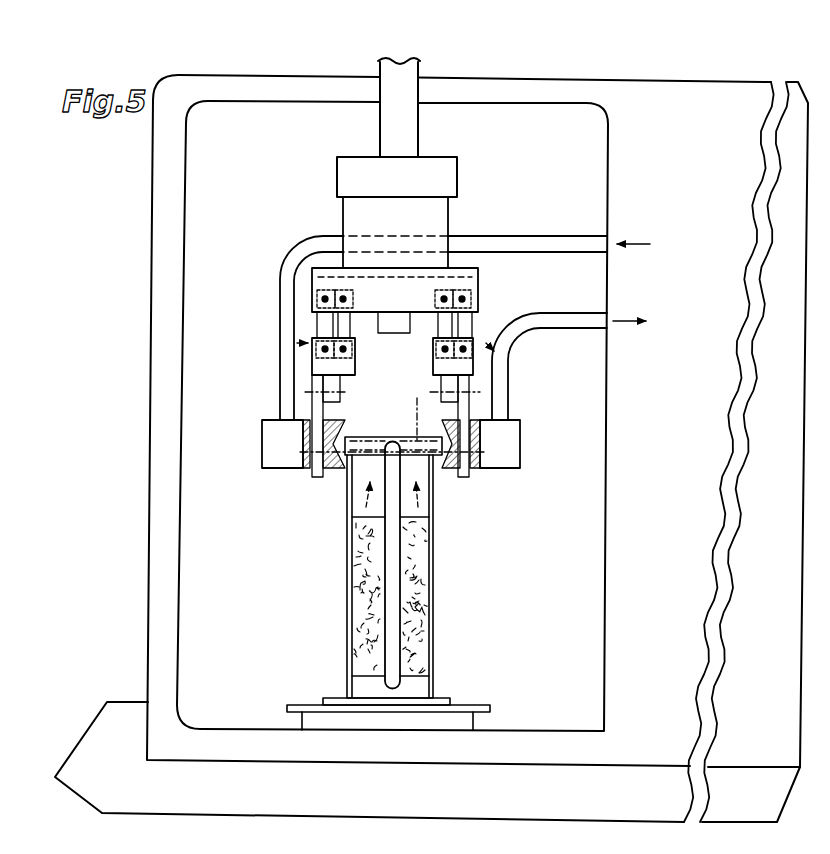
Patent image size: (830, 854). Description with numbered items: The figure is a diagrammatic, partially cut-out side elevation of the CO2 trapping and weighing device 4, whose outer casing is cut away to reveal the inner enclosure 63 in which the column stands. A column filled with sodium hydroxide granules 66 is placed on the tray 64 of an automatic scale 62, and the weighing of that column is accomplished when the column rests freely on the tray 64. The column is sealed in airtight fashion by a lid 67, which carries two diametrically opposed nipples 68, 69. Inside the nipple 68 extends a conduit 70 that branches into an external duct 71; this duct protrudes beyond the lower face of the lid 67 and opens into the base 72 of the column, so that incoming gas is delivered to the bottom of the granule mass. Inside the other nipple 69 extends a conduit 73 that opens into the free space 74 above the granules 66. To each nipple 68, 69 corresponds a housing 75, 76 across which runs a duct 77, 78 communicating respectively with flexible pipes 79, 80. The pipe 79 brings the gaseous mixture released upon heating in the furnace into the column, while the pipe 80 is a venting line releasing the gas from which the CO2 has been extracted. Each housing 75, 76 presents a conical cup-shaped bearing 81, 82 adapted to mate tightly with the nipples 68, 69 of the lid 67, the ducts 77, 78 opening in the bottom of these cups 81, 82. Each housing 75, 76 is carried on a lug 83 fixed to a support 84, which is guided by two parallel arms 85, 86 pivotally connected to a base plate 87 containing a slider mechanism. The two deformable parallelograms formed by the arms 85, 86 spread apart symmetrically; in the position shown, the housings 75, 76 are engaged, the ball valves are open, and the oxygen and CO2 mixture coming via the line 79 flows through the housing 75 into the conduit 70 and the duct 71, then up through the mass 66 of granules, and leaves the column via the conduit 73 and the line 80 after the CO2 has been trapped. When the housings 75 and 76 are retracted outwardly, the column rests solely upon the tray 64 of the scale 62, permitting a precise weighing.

The CO2 measuring device 4 is at (138, 345).
The automatic scale 62 is at (195, 790).
The inner chamber wall 63 is at (200, 597).
The tray 64 is at (465, 720).
The sodium hydroxide granules 66 is at (433, 568).
The lid 67 is at (380, 436).
The nipple 68 is at (350, 437).
The nipple 69 is at (420, 437).
The conduit 70 is at (372, 450).
The external duct 71 is at (391, 622).
The base of column 72 is at (420, 690).
The conduit 73 is at (413, 409).
The free space 74 is at (427, 492).
The housing 75 is at (262, 455).
The housing 76 is at (520, 432).
The duct 77 is at (300, 447).
The duct 78 is at (483, 447).
The flexible pipe 79 is at (566, 250).
The flexible pipe 80 is at (596, 329).
The conical cup-shaped bearing 81 is at (340, 422).
The conical cup-shaped bearing 82 is at (441, 472).
The lug 83 is at (470, 388).
The support 84 is at (433, 362).
The parallel arm 85 is at (440, 295).
The parallel arm 86 is at (465, 295).
The base plate 87 is at (480, 283).